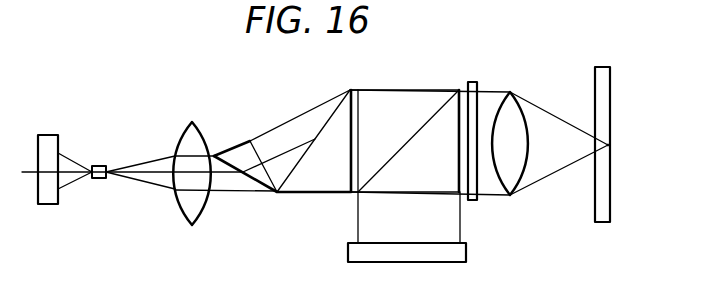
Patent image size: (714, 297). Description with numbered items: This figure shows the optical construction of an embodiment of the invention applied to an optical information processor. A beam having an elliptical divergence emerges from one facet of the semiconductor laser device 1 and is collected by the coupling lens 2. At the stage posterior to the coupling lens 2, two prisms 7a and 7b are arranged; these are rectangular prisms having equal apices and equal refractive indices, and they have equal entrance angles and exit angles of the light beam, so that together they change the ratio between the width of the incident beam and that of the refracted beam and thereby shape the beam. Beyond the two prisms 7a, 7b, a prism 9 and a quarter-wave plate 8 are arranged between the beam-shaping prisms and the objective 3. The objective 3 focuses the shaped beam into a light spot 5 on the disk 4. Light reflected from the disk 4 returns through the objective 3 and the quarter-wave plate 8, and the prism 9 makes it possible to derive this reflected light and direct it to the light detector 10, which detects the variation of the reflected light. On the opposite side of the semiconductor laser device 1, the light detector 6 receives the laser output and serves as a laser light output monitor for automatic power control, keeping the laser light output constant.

The semiconductor laser device 1 is at (101, 181).
The coupling lens 2 is at (188, 205).
The objective 3 is at (510, 178).
The disk 4 is at (607, 107).
The light spot 5 is at (611, 145).
The light detector 6 is at (50, 200).
The prism 7a is at (236, 143).
The prism 7b is at (310, 194).
The quarter-wave plate 8 is at (477, 82).
The prism 9 is at (422, 95).
The light detector 10 is at (458, 252).